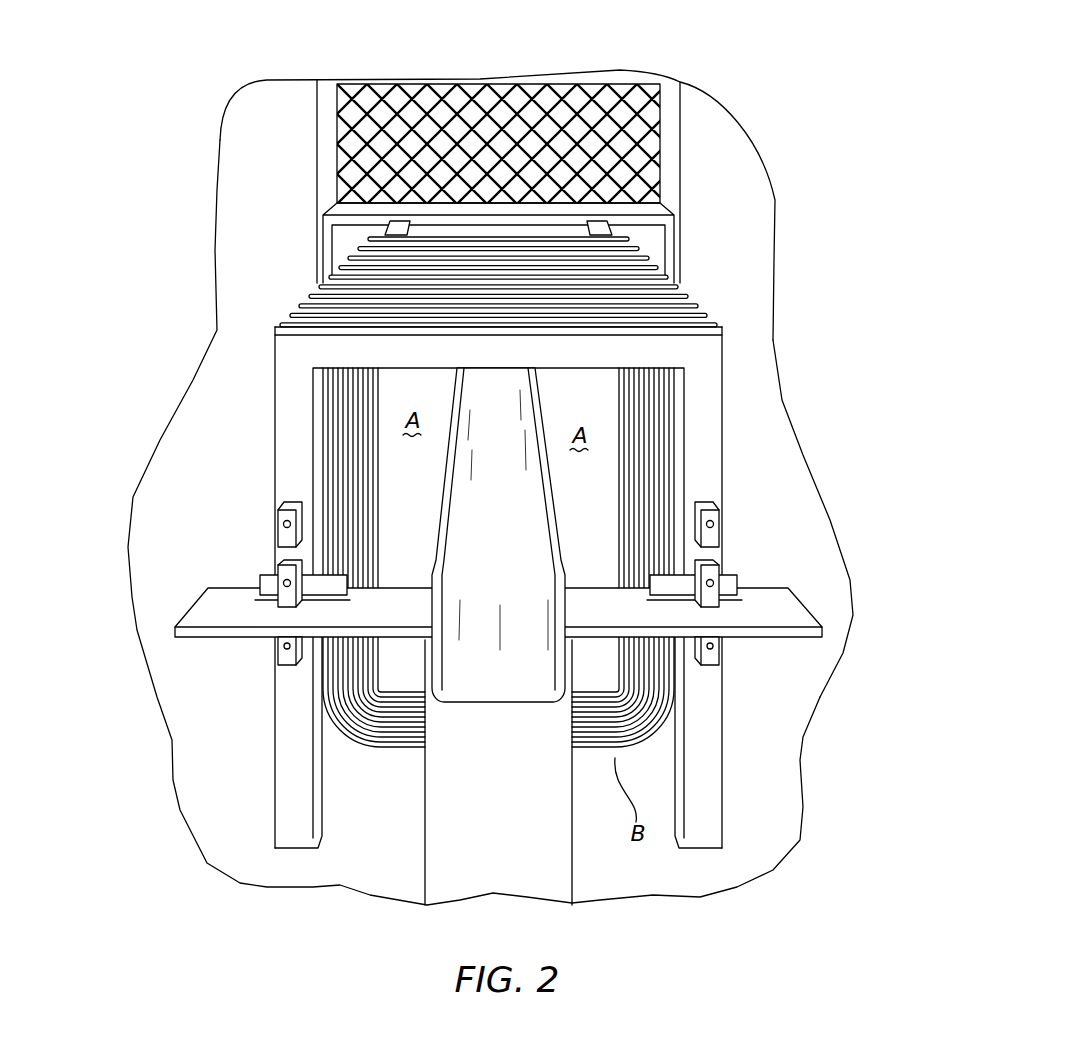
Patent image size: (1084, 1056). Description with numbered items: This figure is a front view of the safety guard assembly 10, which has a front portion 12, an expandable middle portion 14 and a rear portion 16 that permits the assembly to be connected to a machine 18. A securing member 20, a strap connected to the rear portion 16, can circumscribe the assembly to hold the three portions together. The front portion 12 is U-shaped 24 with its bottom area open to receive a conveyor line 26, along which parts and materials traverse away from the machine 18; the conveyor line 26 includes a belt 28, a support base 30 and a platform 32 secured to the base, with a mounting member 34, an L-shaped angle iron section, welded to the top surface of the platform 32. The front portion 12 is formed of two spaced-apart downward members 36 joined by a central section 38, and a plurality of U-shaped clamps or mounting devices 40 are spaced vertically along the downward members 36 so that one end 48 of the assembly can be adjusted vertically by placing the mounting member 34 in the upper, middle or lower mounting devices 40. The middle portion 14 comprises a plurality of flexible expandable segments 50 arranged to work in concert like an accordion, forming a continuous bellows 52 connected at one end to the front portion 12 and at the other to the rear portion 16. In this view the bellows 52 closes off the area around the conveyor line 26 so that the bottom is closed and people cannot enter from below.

The safety guard assembly 10 is at (742, 338).
The front portion 12 is at (705, 391).
The middle portion 14 is at (690, 297).
The rear portion 16 is at (667, 235).
The machine 18 is at (327, 100).
The securing member 20 is at (396, 221).
The U-shaped configuration 24 is at (293, 353).
The conveyor line 26 is at (513, 448).
The belt 28 is at (553, 520).
The support base 30 is at (510, 815).
The platform 32 is at (826, 618).
The mounting member 34 is at (262, 583).
The downward members 36 is at (292, 737).
The central section 38 is at (357, 352).
The mounting devices 40 is at (708, 505).
The one end 48 is at (845, 441).
The flexible expandable segments 50 is at (320, 287).
The bellows 52 is at (363, 513).